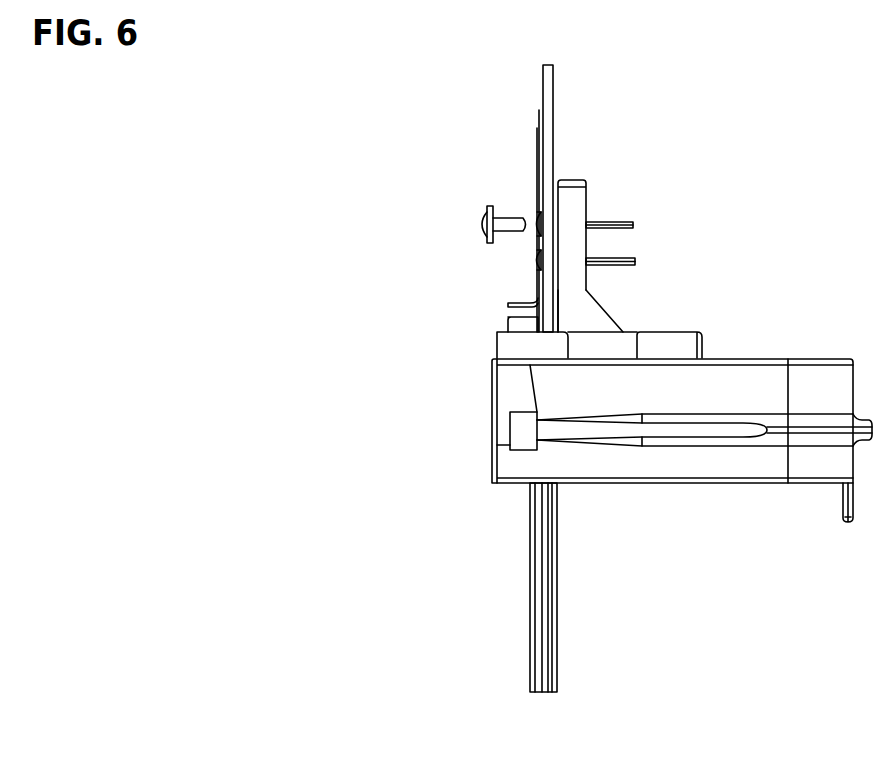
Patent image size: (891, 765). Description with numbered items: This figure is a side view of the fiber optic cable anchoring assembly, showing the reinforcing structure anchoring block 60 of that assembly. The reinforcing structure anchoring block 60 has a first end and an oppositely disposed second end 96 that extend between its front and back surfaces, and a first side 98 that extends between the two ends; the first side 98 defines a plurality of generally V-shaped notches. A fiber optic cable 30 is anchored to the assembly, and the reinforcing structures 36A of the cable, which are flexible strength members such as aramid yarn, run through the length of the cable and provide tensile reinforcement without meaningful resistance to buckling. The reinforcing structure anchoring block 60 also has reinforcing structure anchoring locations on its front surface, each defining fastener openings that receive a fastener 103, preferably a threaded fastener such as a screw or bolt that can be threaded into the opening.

The reinforcing structure anchoring block 60 is at (614, 164).
The first side 98 is at (573, 180).
The second end 96 is at (575, 312).
The reinforcing structures 36A is at (612, 222).
The fastener 103 is at (480, 228).
The fiber optic cable 30 is at (516, 624).